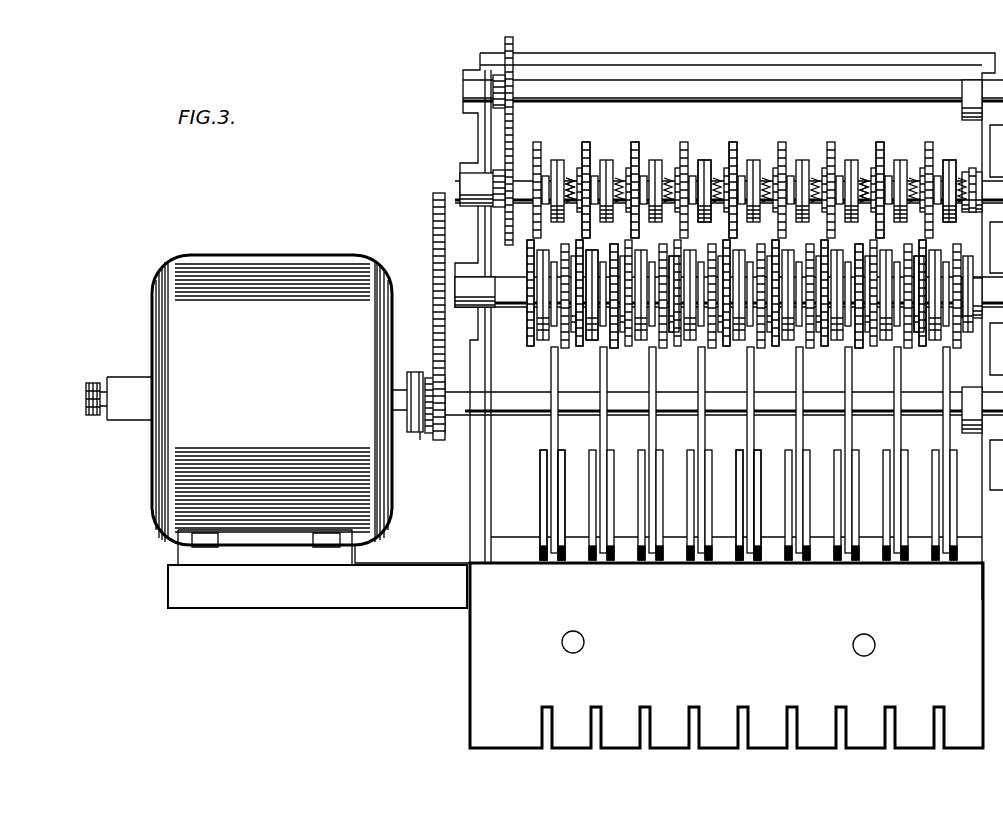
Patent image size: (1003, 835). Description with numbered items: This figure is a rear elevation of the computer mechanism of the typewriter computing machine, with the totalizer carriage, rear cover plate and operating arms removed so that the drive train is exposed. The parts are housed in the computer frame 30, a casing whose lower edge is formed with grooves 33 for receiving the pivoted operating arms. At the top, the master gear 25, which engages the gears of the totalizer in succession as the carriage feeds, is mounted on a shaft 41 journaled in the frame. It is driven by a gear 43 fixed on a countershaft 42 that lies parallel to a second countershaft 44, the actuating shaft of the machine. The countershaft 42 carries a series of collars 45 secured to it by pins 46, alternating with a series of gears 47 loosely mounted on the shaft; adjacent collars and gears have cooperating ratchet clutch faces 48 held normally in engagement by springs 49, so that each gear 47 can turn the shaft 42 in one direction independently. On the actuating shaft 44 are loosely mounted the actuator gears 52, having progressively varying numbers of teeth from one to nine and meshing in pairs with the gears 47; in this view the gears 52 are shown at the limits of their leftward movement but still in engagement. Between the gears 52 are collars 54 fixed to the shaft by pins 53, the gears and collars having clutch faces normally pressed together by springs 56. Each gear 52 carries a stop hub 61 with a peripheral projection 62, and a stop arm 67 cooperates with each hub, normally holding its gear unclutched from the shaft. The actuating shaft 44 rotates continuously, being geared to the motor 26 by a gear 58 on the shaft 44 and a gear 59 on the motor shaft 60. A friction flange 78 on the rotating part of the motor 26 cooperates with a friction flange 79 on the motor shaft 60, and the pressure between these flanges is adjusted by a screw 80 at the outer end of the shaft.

The master gear 25 is at (514, 50).
The motor 26 is at (236, 256).
The computer frame 30 is at (718, 62).
The grooves 33 is at (598, 748).
The shaft 41 is at (823, 98).
The countershaft 42 is at (470, 186).
The gear 43 is at (505, 150).
The actuating shaft 44 is at (470, 274).
The collars 45 is at (566, 176).
The pins 46 is at (592, 176).
The gears 47 is at (637, 150).
The ratchet clutch faces 48 is at (702, 178).
The springs 49 is at (764, 176).
The actuator gears 52 is at (531, 344).
The pins 53 is at (578, 342).
The collars 54 is at (614, 348).
The springs 56 is at (673, 334).
The gear 58 is at (433, 226).
The gear 59 is at (437, 434).
The motor shaft 60 is at (530, 414).
The stop hub 61 is at (731, 340).
The projection 62 is at (592, 252).
The stop arms 67 is at (600, 484).
The friction flange 78 is at (414, 372).
The friction flange 79 is at (418, 436).
The screw 80 is at (92, 417).